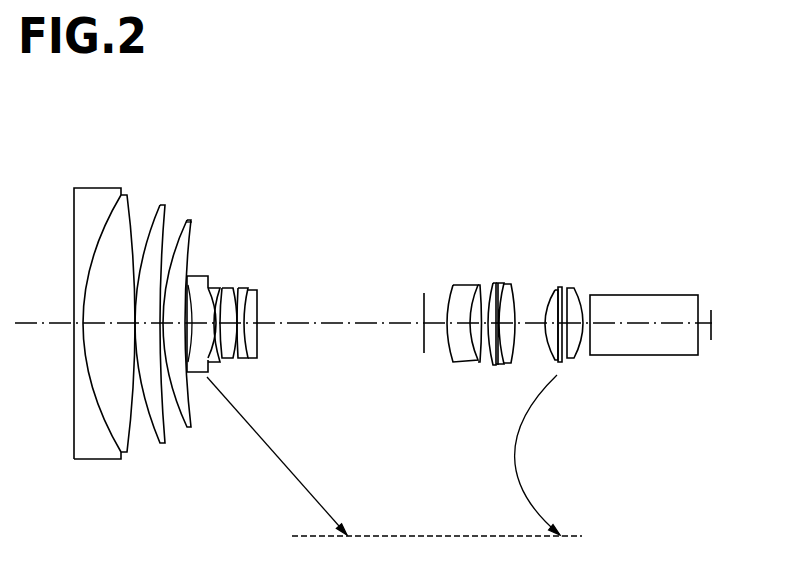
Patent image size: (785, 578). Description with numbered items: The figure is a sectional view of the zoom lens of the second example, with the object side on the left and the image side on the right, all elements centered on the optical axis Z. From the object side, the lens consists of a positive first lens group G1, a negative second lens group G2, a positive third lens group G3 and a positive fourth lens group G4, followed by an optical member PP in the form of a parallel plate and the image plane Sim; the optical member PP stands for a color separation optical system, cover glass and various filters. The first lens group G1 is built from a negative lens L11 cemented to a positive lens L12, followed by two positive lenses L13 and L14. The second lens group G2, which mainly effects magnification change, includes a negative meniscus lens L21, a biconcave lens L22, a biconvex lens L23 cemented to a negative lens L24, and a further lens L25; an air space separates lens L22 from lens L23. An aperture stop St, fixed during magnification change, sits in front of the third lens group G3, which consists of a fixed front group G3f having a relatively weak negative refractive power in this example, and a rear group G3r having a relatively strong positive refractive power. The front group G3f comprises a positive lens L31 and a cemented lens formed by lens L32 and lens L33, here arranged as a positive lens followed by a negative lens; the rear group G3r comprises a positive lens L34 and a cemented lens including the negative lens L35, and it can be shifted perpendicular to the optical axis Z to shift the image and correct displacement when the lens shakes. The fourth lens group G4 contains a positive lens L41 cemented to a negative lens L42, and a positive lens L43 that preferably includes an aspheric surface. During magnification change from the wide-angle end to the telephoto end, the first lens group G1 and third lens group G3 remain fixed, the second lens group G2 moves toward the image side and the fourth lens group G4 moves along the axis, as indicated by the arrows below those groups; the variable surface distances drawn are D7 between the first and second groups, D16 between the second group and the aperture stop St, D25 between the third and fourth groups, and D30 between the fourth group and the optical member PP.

The first lens group G1 is at (54, 103).
The lens L11 is at (97, 191).
The lens L12 is at (122, 196).
The lens L13 is at (160, 206).
The lens L14 is at (187, 220).
The surface distance D7 is at (186, 288).
The second lens group G2 is at (362, 183).
The lens L21 is at (205, 277).
The lens L22 is at (227, 288).
The lens L23 is at (238, 288).
The lens L24 is at (247, 289).
The fifth lens of second group L25 is at (257, 290).
The surface distance D16 is at (337, 314).
The aperture stop St is at (424, 353).
The third lens group G3 is at (378, 153).
The front group G3f is at (378, 183).
The rear group G3r is at (440, 183).
The lens L31 is at (453, 285).
The lens L32 is at (478, 285).
The lens L33 is at (493, 283).
The lens L34 is at (500, 283).
The lens L35 is at (511, 285).
The surface distance D25 is at (528, 322).
The fourth lens group G4 is at (670, 153).
The lens L41 is at (556, 290).
The lens L42 is at (561, 287).
The lens L43 is at (572, 288).
The surface distance D30 is at (592, 320).
The optical member PP is at (670, 305).
The image plane Sim is at (709, 310).
The optical axis Z is at (33, 322).